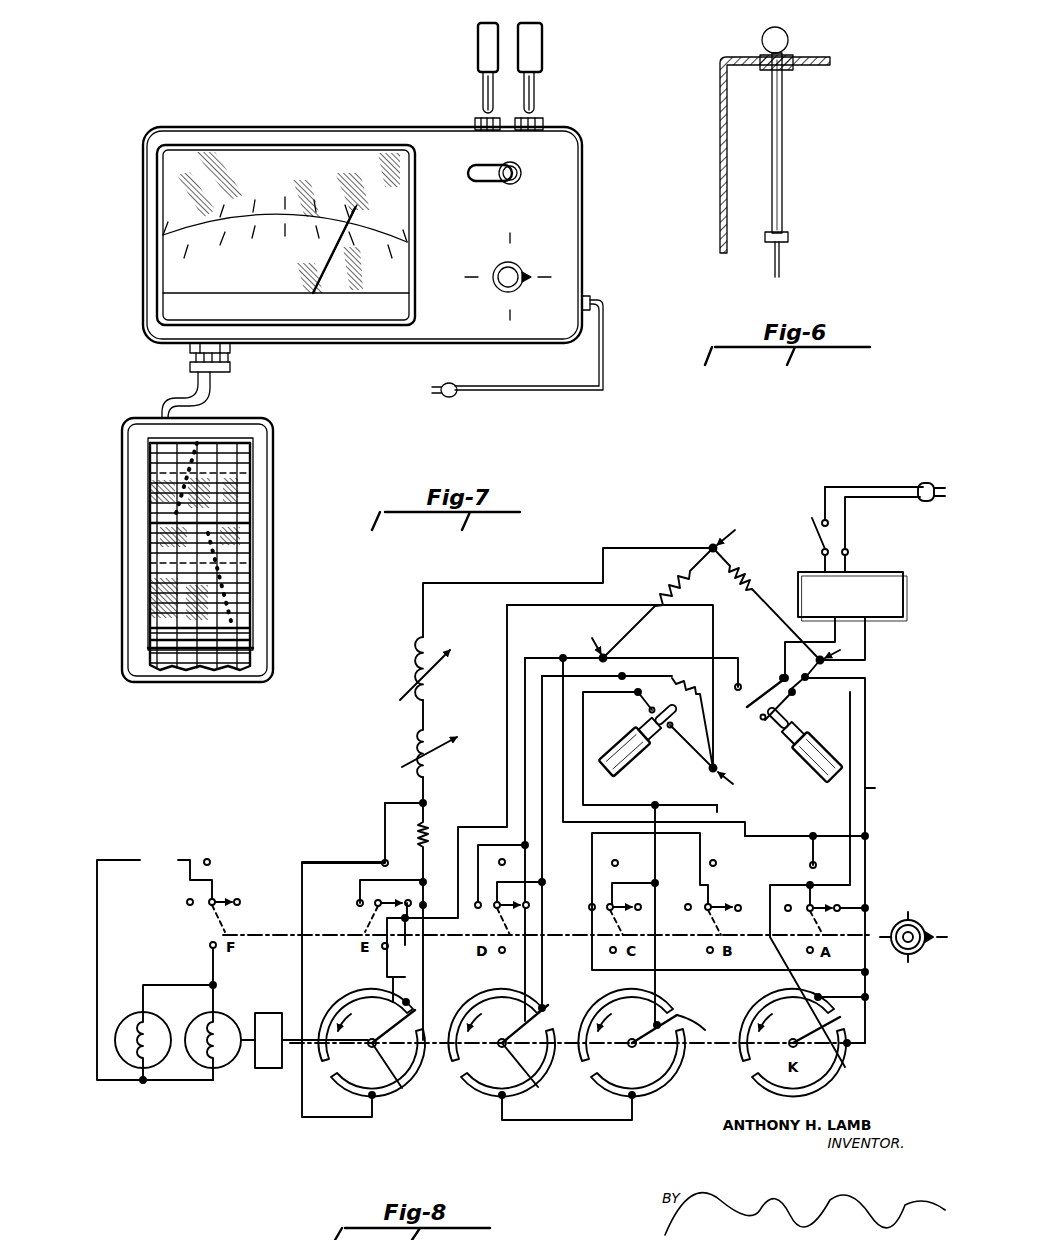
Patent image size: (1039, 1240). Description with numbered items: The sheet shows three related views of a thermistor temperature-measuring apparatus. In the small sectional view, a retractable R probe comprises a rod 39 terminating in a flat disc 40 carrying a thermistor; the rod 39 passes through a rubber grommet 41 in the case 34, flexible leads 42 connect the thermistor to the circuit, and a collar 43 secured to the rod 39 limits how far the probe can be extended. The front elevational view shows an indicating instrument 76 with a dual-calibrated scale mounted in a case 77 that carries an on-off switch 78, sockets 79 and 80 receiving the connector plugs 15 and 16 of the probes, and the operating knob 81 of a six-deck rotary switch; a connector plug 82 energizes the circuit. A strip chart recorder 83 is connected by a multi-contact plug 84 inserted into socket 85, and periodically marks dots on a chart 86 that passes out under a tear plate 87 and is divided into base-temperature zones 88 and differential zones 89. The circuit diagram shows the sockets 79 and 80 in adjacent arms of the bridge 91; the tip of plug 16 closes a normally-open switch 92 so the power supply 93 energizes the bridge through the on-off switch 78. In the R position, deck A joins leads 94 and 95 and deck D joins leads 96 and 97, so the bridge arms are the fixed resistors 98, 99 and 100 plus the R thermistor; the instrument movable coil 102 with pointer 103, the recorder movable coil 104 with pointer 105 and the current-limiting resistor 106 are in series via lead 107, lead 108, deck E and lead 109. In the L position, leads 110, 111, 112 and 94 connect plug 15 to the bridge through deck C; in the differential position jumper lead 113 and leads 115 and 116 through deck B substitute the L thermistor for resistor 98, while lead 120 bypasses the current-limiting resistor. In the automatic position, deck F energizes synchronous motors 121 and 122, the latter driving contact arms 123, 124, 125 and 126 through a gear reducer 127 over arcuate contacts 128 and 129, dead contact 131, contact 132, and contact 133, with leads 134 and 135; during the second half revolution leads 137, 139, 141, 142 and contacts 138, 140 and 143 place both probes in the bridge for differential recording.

In FIG. 7, the L connector plug 15 is at (477, 40).
In FIG. 8, the L connector plug 15 is at (636, 758).
In FIG. 7, the R connector plug 16 is at (543, 40).
In FIG. 8, the R connector plug 16 is at (816, 735).
In FIG. 6, the case 34 is at (720, 95).
In FIG. 6, the rod 39 is at (783, 135).
In FIG. 6, the flat disc 40 is at (763, 31).
In FIG. 6, the rubber grommet 41 is at (793, 57).
In FIG. 6, the flexible leads 42 is at (782, 256).
In FIG. 6, the collar 43 is at (788, 235).
In FIG. 7, the indicating instrument 76 is at (157, 232).
In FIG. 7, the case 77 is at (330, 127).
In FIG. 7, the on-off switch 78 is at (494, 165).
In FIG. 8, the on-off switch 78 is at (815, 515).
In FIG. 7, the socket 79 is at (475, 122).
In FIG. 8, the socket 79 is at (640, 718).
In FIG. 7, the socket 80 is at (547, 118).
In FIG. 8, the socket 80 is at (768, 730).
In FIG. 7, the operating knob 81 is at (520, 268).
In FIG. 8, the operating knob 81 is at (893, 910).
In FIG. 7, the connector plug 82 is at (456, 386).
In FIG. 8, the connector plug 82 is at (925, 484).
In FIG. 7, the strip chart recorder 83 is at (275, 440).
In FIG. 7, the multi-contact plug 84 is at (232, 369).
In FIG. 7, the socket 85 is at (232, 347).
In FIG. 7, the chart 86 is at (163, 688).
In FIG. 7, the tear plate 87 is at (147, 650).
In FIG. 7, the chart zones 88 is at (240, 545).
In FIG. 7, the chart zones 89 is at (236, 488).
In FIG. 8, the bridge 91 is at (724, 602).
In FIG. 8, the normally-open switch 92 is at (753, 694).
In FIG. 8, the power supply 93 is at (888, 570).
In FIG. 8, the lead 94 is at (867, 685).
In FIG. 8, the lead 95 is at (881, 789).
In FIG. 8, the lead 96 is at (540, 690).
In FIG. 8, the lead 97 is at (544, 655).
In FIG. 8, the bridge resistor 98 is at (690, 680).
In FIG. 8, the fixed resistor 99 is at (670, 578).
In FIG. 8, the fixed resistor 100 is at (748, 572).
In FIG. 8, the instrument movable coil 102 is at (420, 645).
In FIG. 7, the pointer 103 is at (312, 262).
In FIG. 8, the pointer 103 is at (456, 642).
In FIG. 8, the recorder movable coil 104 is at (415, 735).
In FIG. 8, the pointer 105 is at (458, 735).
In FIG. 8, the current-limiting resistor 106 is at (437, 812).
In FIG. 8, the lead 107 is at (603, 568).
In FIG. 8, the lead 108 is at (430, 850).
In FIG. 8, the lead 109 is at (505, 767).
In FIG. 8, the lead 110 is at (598, 825).
In FIG. 8, the lead 111 is at (655, 852).
In FIG. 8, the lead 112 is at (760, 836).
In FIG. 8, the jumper lead 113 is at (835, 836).
In FIG. 8, the lead 115 is at (670, 825).
In FIG. 8, the lead 116 is at (717, 812).
In FIG. 8, the lead 120 is at (385, 803).
In FIG. 8, the synchronous motor 121 is at (140, 1012).
In FIG. 8, the synchronous motor 122 is at (235, 1012).
In FIG. 8, the contact arm 123 is at (402, 1080).
In FIG. 8, the contact arm 124 is at (538, 1080).
In FIG. 8, the contact arm 125 is at (683, 1043).
In FIG. 8, the contact arm 126 is at (843, 1064).
In FIG. 8, the gear reducer 127 is at (270, 1070).
In FIG. 8, the arcuate contact 128 is at (748, 1020).
In FIG. 8, the arcuate contact 129 is at (840, 1085).
In FIG. 8, the arcuate contact 131 is at (600, 1000).
In FIG. 8, the arcuate contact 132 is at (478, 1000).
In FIG. 8, the arcuate contact 133 is at (357, 993).
In FIG. 8, the lead 134 is at (415, 950).
In FIG. 8, the lead 135 is at (428, 976).
In FIG. 8, the lead 137 is at (655, 960).
In FIG. 8, the arcuate contact 138 is at (660, 1085).
In FIG. 8, the lead 139 is at (580, 1120).
In FIG. 8, the arcuate contact 140 is at (490, 1095).
In FIG. 8, the lead 141 is at (528, 922).
In FIG. 8, the lead 142 is at (300, 875).
In FIG. 8, the arcuate contact 143 is at (392, 1100).